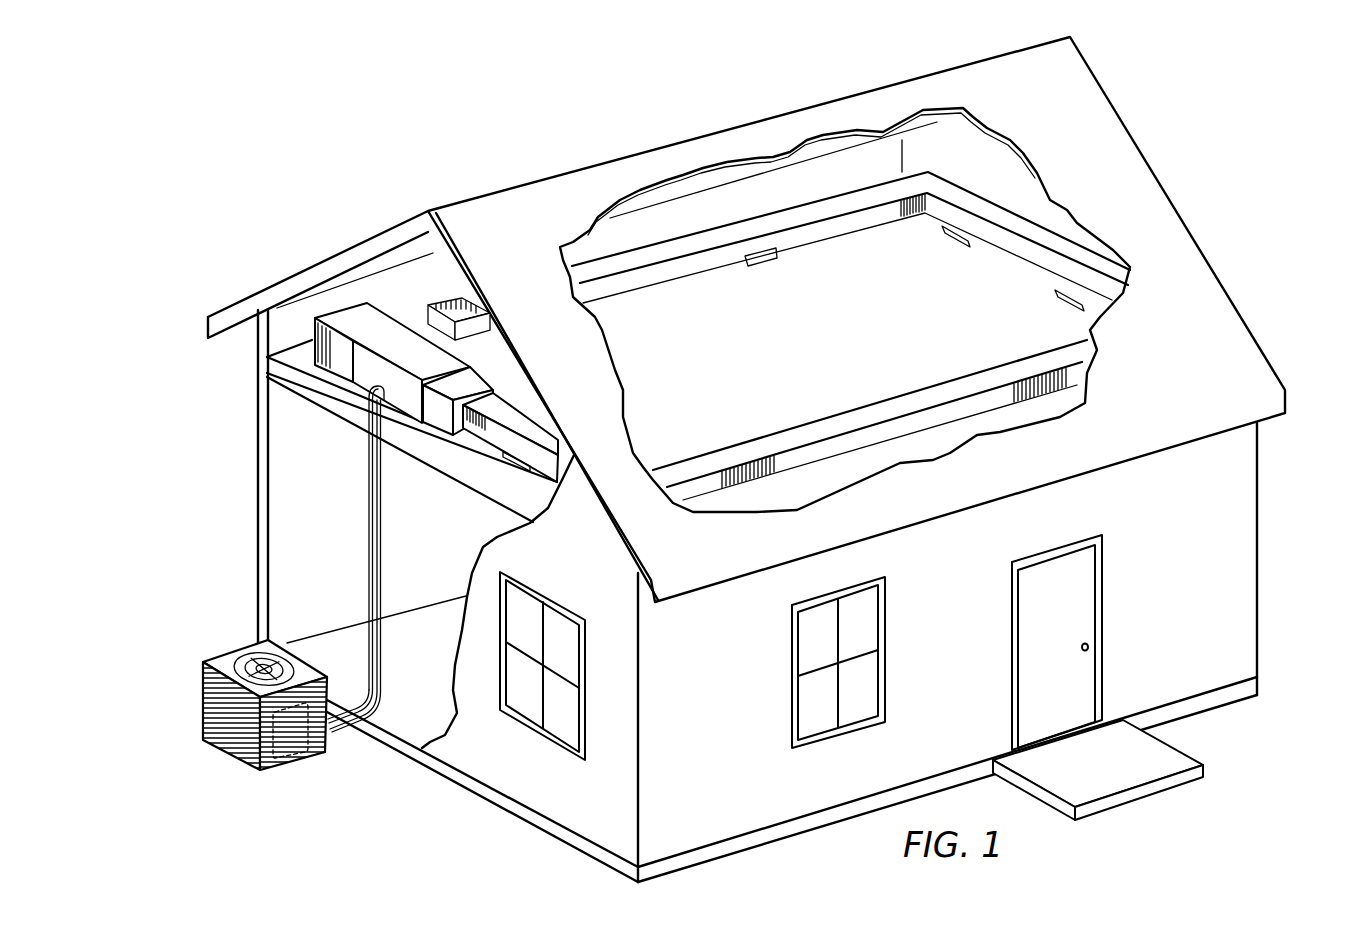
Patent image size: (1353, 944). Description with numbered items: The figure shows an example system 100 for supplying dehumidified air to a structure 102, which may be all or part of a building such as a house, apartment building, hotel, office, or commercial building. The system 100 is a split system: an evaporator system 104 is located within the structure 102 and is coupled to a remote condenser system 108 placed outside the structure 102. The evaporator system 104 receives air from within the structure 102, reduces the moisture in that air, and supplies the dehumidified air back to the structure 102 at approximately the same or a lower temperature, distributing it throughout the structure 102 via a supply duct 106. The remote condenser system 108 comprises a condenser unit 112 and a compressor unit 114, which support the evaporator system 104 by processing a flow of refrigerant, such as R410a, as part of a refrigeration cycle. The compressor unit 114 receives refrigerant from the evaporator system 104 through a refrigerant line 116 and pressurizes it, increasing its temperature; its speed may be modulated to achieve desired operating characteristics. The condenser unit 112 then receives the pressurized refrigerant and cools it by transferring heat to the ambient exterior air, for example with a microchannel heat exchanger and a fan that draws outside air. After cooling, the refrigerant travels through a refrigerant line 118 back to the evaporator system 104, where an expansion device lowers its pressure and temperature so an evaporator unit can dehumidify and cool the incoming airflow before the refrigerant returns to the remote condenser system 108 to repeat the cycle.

The system 100 is at (458, 112).
The structure 102 is at (1240, 548).
The evaporator system 104 is at (447, 362).
The supply duct 106 is at (1008, 252).
The remote condenser system 108 is at (209, 752).
The condenser unit 112 is at (238, 745).
The compressor unit 114 is at (292, 733).
The refrigerant line 116 is at (368, 566).
The refrigerant line 118 is at (382, 547).